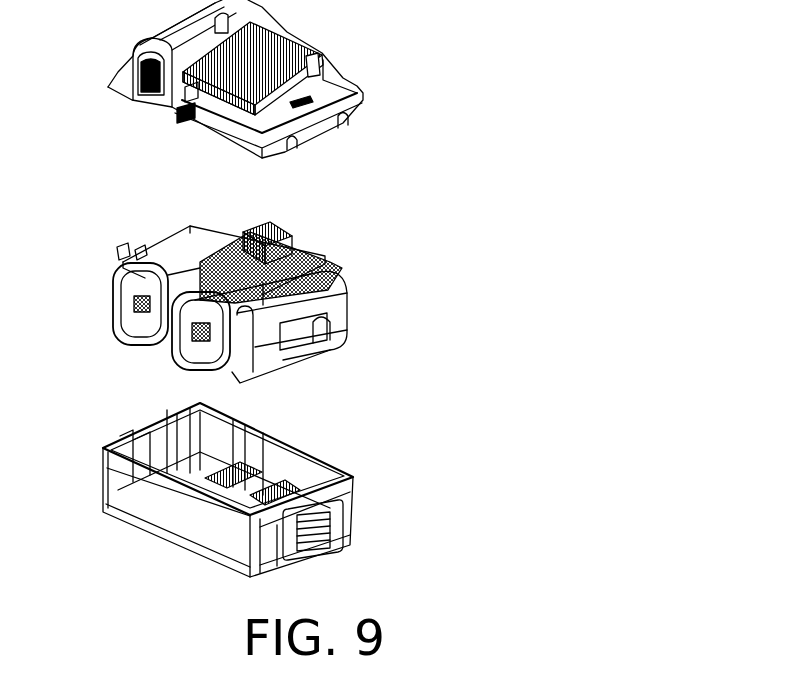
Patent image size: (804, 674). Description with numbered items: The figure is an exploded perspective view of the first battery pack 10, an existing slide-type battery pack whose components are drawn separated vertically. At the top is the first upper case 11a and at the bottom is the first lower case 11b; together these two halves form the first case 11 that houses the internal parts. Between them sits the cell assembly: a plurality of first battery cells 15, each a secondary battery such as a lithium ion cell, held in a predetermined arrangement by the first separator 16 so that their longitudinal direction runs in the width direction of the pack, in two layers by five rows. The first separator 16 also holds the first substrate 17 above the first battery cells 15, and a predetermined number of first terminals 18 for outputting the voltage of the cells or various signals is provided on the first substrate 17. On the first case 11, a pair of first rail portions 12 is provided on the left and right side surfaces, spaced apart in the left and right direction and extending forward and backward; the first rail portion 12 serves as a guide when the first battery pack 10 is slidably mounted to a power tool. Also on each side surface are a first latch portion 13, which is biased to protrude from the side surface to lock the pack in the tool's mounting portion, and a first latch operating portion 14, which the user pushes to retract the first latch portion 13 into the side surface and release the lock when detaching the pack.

The first battery pack 10 is at (365, 312).
The first case 11 is at (335, 288).
The first upper case 11a is at (337, 102).
The first lower case 11b is at (357, 503).
The first rail portion 12 is at (292, 52).
The first latch portion 13 is at (200, 115).
The first latch operating portion 14 is at (148, 100).
The first battery cell 15 is at (117, 322).
The first separator 16 is at (130, 263).
The first substrate 17 is at (167, 238).
The first terminal 18 is at (282, 233).